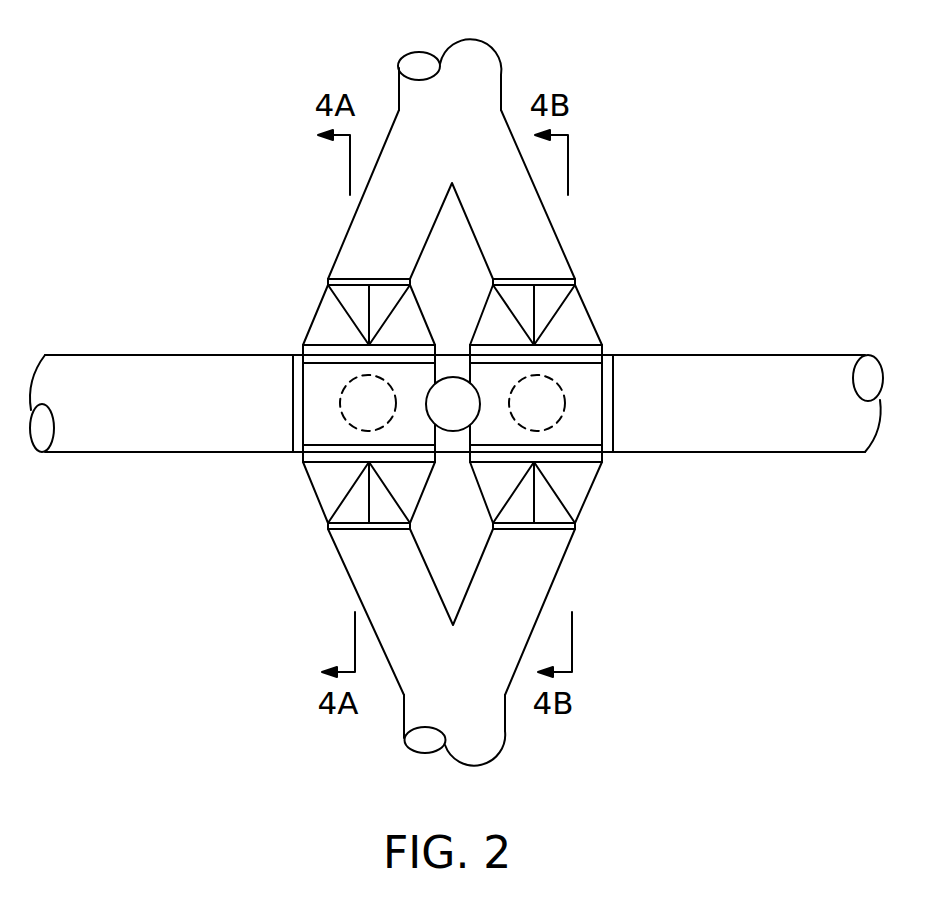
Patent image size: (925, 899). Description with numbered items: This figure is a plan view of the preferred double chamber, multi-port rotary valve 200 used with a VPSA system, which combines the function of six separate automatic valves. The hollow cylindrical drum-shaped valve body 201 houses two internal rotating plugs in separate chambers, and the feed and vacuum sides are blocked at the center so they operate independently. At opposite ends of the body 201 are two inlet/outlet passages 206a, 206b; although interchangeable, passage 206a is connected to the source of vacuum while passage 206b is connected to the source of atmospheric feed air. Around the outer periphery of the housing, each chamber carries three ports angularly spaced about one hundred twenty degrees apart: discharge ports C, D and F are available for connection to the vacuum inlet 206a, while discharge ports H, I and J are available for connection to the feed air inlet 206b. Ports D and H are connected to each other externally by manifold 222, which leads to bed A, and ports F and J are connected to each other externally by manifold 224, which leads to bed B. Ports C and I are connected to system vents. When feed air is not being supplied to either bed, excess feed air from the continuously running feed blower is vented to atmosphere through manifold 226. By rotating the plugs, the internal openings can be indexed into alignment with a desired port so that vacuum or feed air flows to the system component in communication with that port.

The rotary valve 200 is at (267, 156).
The valve body 201 is at (612, 364).
The vacuum inlet passage 206a is at (103, 372).
The feed air inlet passage 206b is at (723, 362).
The manifold 222 is at (492, 715).
The manifold 224 is at (485, 77).
The manifold 226 is at (452, 431).
The port C is at (352, 418).
The port D is at (325, 488).
The port F is at (325, 322).
The port H is at (579, 497).
The port I is at (552, 413).
The port J is at (577, 318).